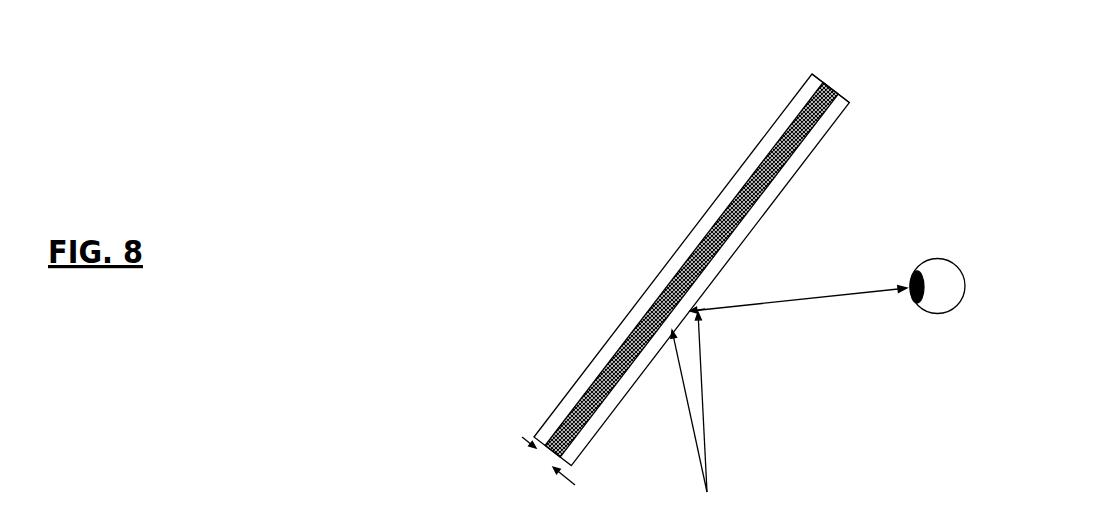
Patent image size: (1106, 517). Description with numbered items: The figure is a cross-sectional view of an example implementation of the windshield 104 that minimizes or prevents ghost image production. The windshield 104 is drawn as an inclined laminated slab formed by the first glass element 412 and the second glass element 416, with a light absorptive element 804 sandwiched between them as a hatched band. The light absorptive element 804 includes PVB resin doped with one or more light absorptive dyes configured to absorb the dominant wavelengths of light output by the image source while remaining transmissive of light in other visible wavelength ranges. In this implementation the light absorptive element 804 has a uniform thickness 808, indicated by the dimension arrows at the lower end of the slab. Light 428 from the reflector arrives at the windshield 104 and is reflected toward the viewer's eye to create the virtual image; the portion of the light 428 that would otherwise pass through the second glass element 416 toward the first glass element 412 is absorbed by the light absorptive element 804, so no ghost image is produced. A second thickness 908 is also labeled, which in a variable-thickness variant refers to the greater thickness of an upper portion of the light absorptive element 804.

The windshield 104 is at (842, 167).
The first glass element 412 is at (722, 202).
The second glass element 416 is at (754, 213).
The light 428 is at (707, 492).
The light absorptive element 804 is at (829, 91).
The uniform thickness 808 is at (525, 465).
The second thickness 908 is at (815, 516).